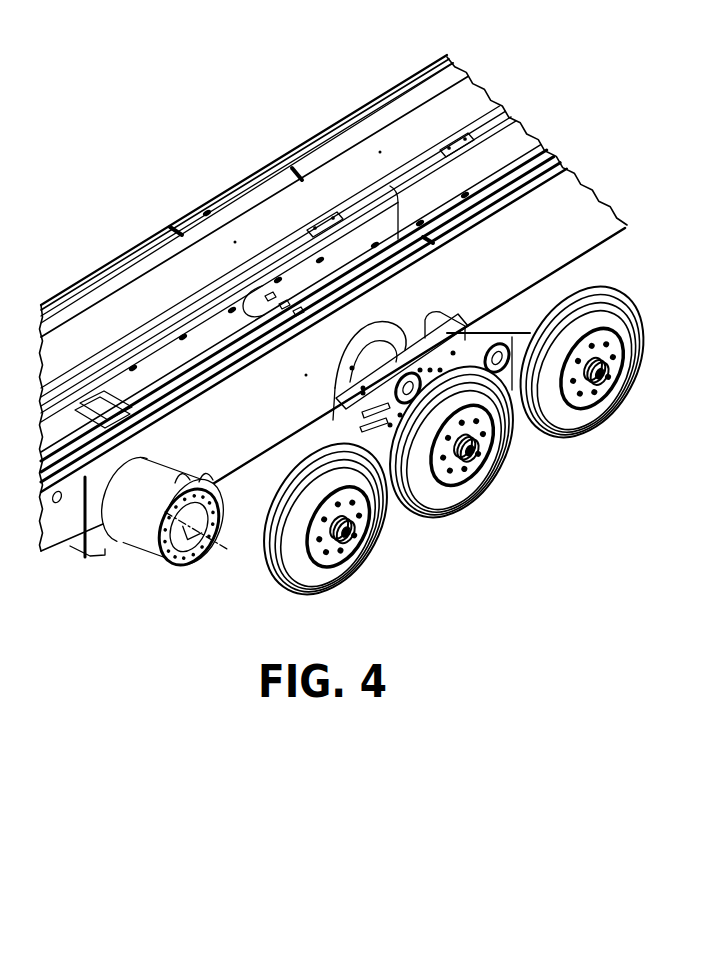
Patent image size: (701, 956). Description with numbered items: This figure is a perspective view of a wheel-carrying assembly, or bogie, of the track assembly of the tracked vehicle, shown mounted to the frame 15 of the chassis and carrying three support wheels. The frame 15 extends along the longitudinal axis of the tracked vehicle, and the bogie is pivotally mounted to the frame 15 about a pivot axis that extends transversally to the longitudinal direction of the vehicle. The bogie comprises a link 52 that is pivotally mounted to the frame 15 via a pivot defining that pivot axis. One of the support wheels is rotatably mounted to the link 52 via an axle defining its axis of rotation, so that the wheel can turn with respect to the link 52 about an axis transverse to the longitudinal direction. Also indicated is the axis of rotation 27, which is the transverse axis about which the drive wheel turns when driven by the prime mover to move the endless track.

The frame 15 is at (585, 215).
The axis of rotation 27 is at (222, 547).
The link 52 is at (342, 417).